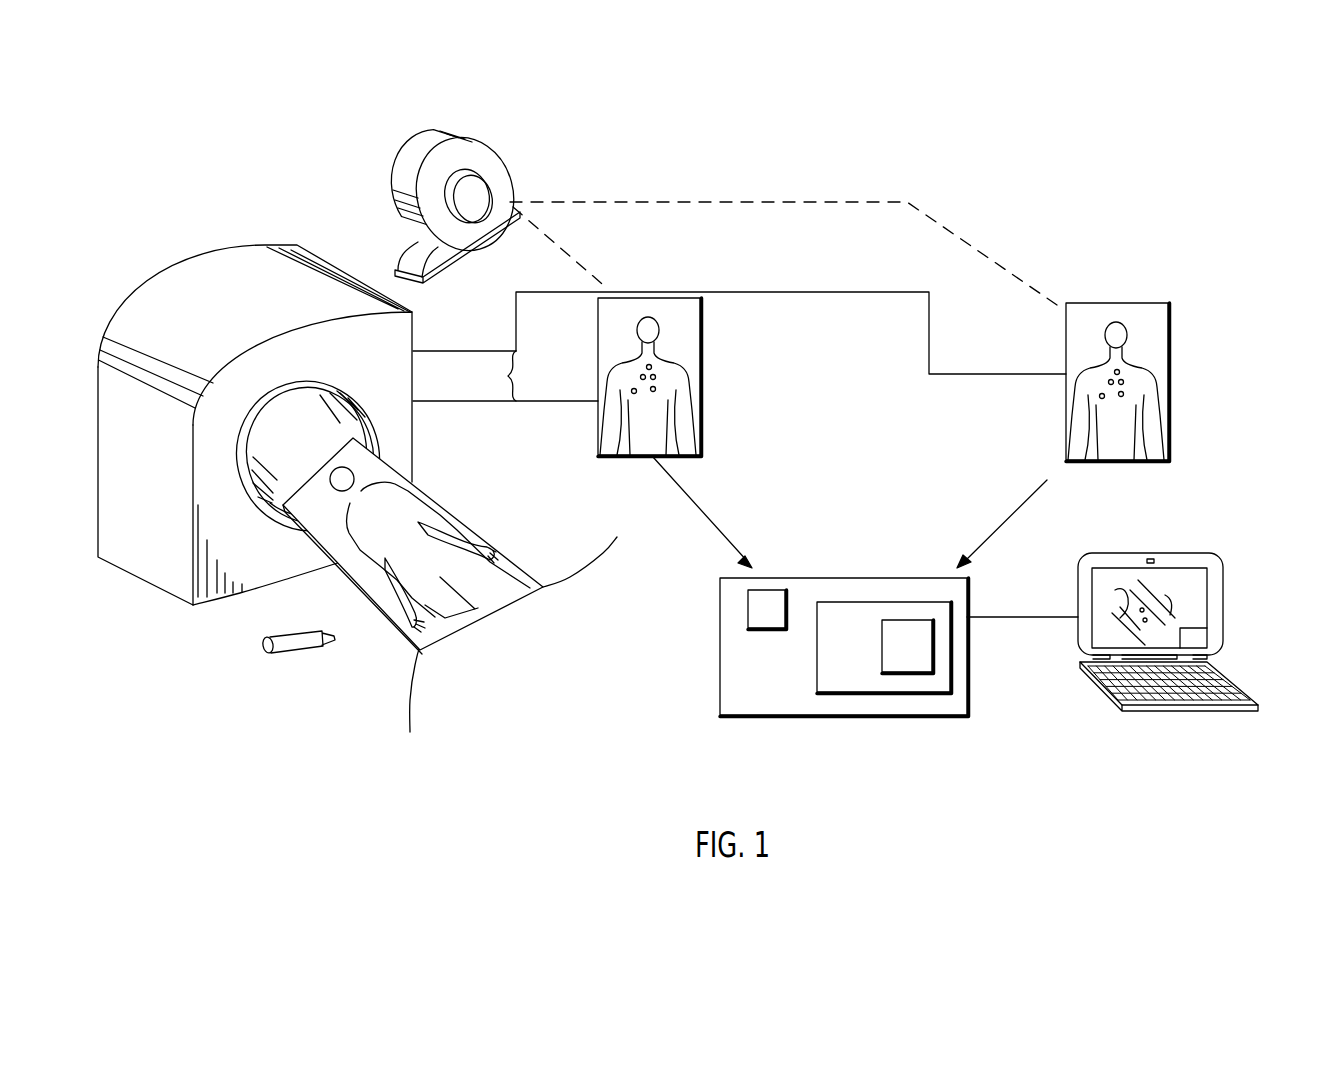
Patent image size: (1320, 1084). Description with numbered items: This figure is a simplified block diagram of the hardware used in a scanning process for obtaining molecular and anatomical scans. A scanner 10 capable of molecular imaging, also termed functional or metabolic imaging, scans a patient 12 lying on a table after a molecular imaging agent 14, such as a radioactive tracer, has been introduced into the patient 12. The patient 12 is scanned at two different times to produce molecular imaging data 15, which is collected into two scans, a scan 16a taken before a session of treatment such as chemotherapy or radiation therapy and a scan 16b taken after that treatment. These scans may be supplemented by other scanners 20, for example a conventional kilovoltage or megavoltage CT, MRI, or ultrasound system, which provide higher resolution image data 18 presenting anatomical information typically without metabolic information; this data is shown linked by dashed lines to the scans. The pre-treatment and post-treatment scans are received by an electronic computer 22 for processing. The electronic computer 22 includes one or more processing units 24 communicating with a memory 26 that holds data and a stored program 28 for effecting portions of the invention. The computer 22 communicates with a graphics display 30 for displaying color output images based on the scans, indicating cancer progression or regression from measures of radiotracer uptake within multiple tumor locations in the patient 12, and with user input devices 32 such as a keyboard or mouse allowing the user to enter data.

The scanner 10 is at (148, 602).
The patient 12 is at (403, 512).
The molecular imaging agent 14 is at (276, 651).
The molecular imaging data 15 is at (505, 376).
The scan 16a is at (701, 409).
The scan 16b is at (1169, 420).
The higher resolution image data 18 is at (573, 260).
The other scanners 20 is at (402, 181).
The electronic computer 22 is at (720, 698).
The processing units 24 is at (760, 608).
The memory 26 is at (849, 675).
The stored program 28 is at (907, 647).
The graphics display 30 is at (1217, 570).
The user input devices 32 is at (1228, 675).